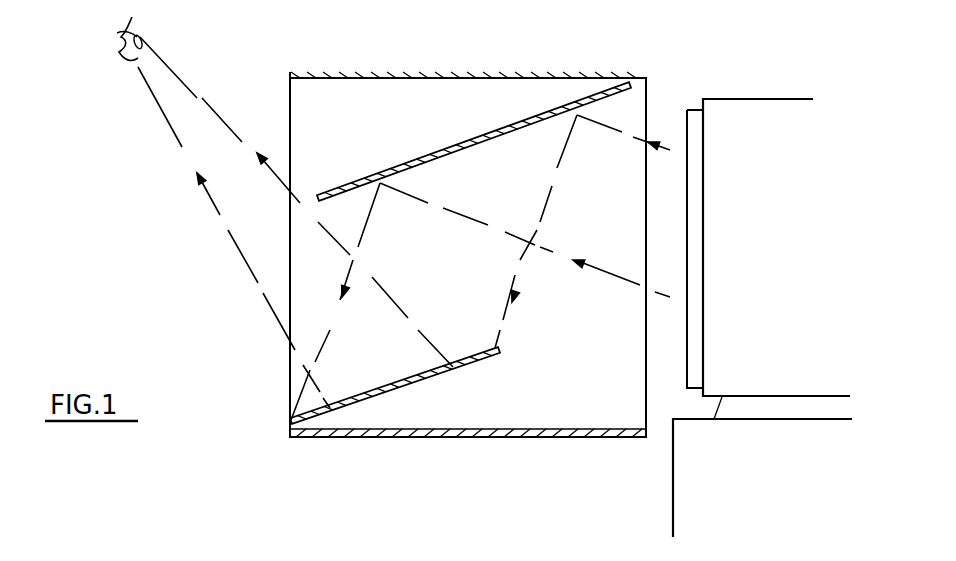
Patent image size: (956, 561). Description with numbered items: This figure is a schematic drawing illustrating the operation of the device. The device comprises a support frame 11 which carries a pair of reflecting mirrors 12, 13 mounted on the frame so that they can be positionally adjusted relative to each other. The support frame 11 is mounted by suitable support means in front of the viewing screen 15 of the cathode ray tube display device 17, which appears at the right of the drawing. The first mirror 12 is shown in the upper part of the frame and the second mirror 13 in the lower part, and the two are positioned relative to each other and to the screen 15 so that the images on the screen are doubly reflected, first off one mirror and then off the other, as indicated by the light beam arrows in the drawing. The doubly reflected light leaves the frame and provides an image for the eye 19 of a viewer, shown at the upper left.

The support frame 11 is at (486, 60).
The reflecting mirror 12 is at (507, 137).
The reflecting mirror 13 is at (468, 355).
The viewing screen 15 is at (687, 122).
The cathode ray tube display device 17 is at (800, 96).
The eye 19 is at (140, 33).